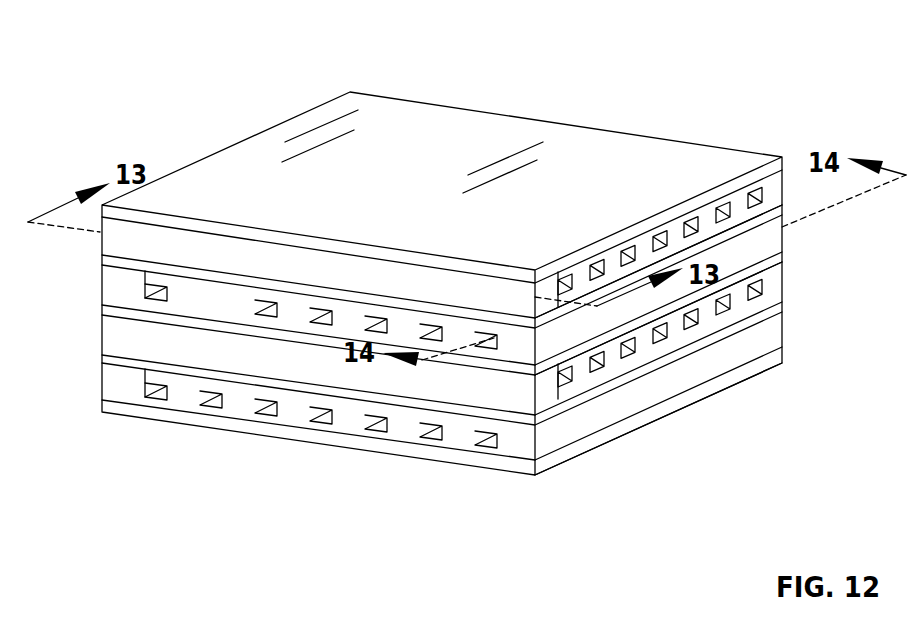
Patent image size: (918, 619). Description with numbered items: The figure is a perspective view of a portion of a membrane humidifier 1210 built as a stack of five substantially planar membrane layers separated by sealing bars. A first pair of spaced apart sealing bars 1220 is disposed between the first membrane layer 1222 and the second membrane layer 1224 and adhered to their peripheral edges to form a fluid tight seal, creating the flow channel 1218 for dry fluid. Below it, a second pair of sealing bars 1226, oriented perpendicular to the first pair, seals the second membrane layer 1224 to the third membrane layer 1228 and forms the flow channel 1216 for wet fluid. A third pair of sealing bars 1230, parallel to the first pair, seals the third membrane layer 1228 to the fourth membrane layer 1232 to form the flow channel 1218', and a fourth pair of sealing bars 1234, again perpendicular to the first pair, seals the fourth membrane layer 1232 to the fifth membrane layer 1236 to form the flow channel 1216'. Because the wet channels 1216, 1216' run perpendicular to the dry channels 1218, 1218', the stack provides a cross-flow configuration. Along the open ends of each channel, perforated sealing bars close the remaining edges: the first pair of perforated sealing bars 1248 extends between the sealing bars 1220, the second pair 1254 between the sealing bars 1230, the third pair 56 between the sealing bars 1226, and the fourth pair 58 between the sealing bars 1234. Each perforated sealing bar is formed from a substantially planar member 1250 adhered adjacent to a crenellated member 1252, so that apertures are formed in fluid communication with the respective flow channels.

The membrane humidifier 1210 is at (135, 105).
The flow channel 1216 is at (91, 292).
The flow channel 1216' is at (90, 388).
The flow channel 1218 is at (712, 258).
The flow channel 1218' is at (712, 318).
The first pair of sealing bars 1220 is at (208, 262).
The first membrane layer 1222 is at (433, 203).
The second membrane layer 1224 is at (760, 374).
The second pair of sealing bars 1226 is at (553, 338).
The third membrane layer 1228 is at (770, 268).
The third pair of sealing bars 1230 is at (267, 363).
The fourth membrane layer 1232 is at (757, 330).
The fourth pair of sealing bars 1234 is at (613, 417).
The fifth membrane layer 1236 is at (782, 356).
The first pair of perforated sealing bars 1248 is at (645, 222).
The planar member 1250 is at (700, 218).
The crenellated member 1252 is at (735, 212).
The second pair of perforated sealing bars 1254 is at (727, 362).
The third pair of perforated sealing bars 56 is at (198, 411).
The fourth pair of perforated sealing bars 58 is at (325, 462).